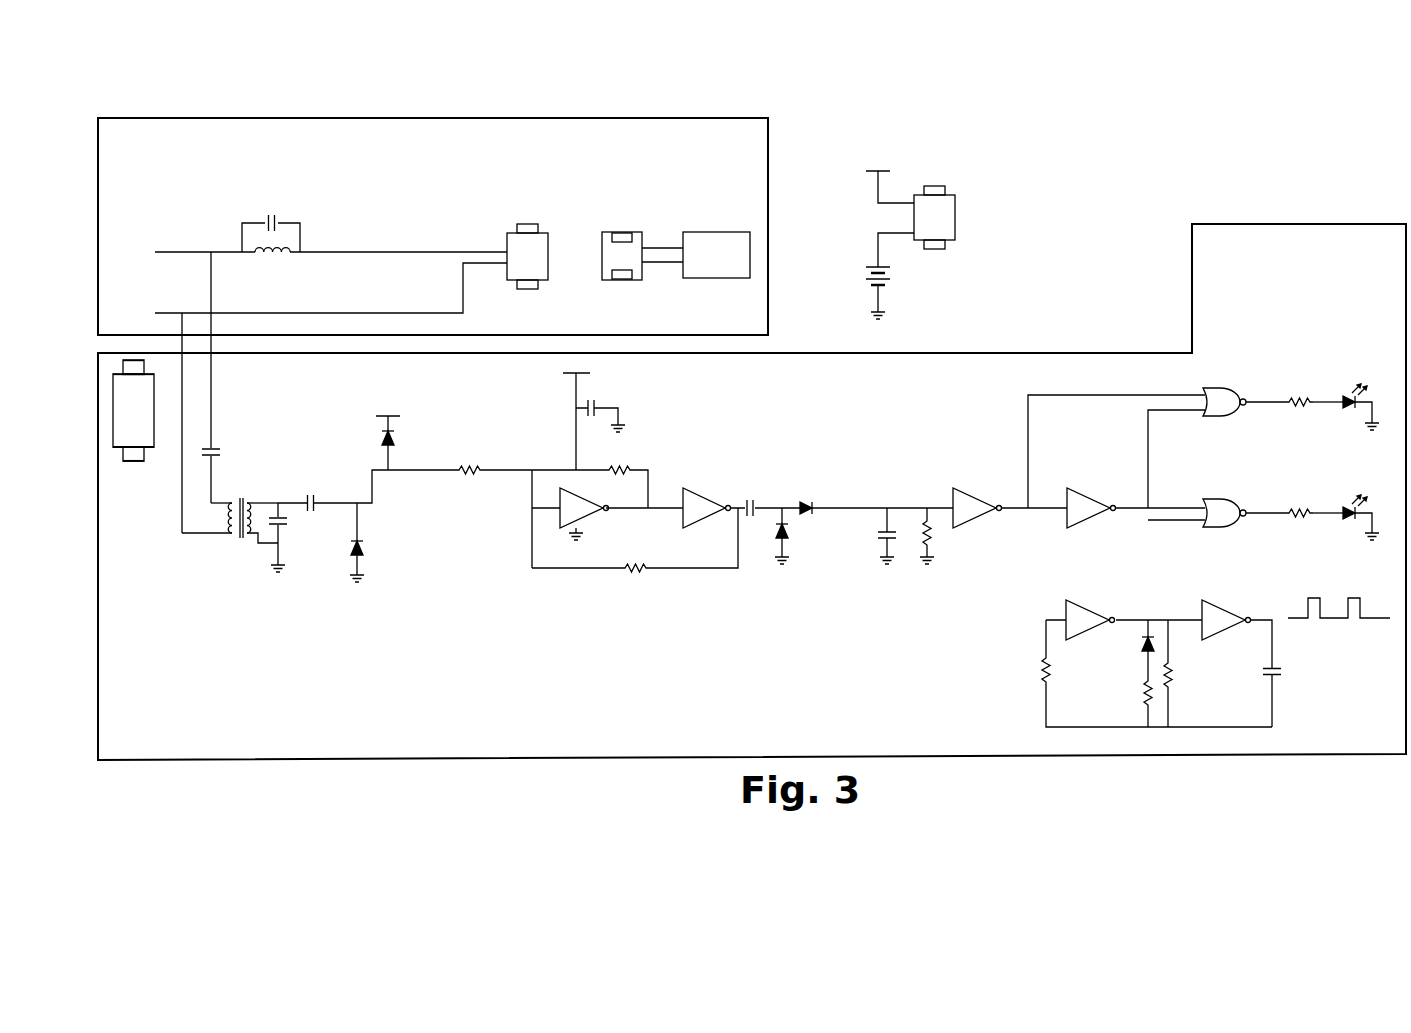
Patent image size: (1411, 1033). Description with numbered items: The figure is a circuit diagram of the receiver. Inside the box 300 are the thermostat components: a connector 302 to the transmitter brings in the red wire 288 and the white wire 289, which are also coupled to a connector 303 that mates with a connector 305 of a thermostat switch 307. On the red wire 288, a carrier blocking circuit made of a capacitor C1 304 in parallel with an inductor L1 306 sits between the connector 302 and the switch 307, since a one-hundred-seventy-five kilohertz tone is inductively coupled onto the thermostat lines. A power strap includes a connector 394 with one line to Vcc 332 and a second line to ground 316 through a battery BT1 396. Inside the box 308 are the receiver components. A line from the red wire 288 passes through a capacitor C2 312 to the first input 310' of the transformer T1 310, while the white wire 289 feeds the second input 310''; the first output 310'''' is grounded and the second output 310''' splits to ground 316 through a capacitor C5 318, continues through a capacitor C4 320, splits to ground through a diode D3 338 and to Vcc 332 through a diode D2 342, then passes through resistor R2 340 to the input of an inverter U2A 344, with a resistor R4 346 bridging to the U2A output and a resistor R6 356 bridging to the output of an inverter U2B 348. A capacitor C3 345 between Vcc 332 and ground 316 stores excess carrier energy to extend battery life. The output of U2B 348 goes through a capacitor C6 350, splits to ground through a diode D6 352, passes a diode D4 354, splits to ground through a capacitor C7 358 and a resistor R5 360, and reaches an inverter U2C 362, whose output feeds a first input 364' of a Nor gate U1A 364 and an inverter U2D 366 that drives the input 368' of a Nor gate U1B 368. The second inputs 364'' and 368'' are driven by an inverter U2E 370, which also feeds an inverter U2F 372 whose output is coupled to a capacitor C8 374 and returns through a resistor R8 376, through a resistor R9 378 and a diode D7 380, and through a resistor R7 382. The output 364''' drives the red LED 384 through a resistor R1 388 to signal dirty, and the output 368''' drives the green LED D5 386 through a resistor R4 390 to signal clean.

The box 300 is at (477, 107).
The connector 302 is at (115, 273).
The red wire 288 is at (165, 251).
The white wire 289 is at (168, 310).
The capacitor C1 304 is at (270, 215).
The inductor L1 306 is at (267, 256).
The connector 303 is at (541, 227).
The connector 305 is at (625, 229).
The thermostat switch 307 is at (715, 229).
The Vcc 332 is at (852, 154).
The connector 394 is at (951, 186).
The battery BT1 396 is at (893, 281).
The ground 316 is at (886, 317).
The box 308 is at (1355, 224).
The capacitor C2 312 is at (212, 448).
The transformer T1 310 is at (203, 548).
The first input 310' is at (228, 489).
The second input 310'' is at (207, 541).
The second output 310''' is at (269, 489).
The first output 310'''' is at (262, 546).
The capacitor C5 318 is at (284, 528).
The capacitor C4 320 is at (318, 503).
The diode D3 338 is at (348, 539).
The diode D2 342 is at (398, 450).
The resistor R2 340 is at (482, 465).
The capacitor C3 345 is at (597, 399).
The resistor R4 346 is at (618, 470).
The inverter U2A 344 is at (586, 521).
The resistor R6 356 is at (635, 546).
The inverter U2B 348 is at (712, 521).
The capacitor C6 350 is at (769, 495).
The diode D4 354 is at (801, 506).
The diode D6 352 is at (800, 532).
The capacitor C7 358 is at (876, 536).
The resistor R5 360 is at (931, 545).
The inverter U2C 362 is at (970, 493).
The inverter U2D 366 is at (1080, 493).
The Nor gate U1A 364 is at (1245, 397).
The first input 364' is at (1116, 439).
The second input 364'' is at (1176, 459).
The output 364''' is at (1270, 415).
The resistor R1 388 is at (1315, 407).
The LED 384 is at (1346, 409).
The Nor gate U1B 368 is at (1245, 501).
The input 368' is at (1180, 494).
The second input 368'' is at (1176, 532).
The output 368''' is at (1269, 497).
The resistor R4 390 is at (1315, 517).
The LED D5 386 is at (1352, 506).
The inverter U2E 370 is at (1098, 628).
The inverter U2F 372 is at (1235, 628).
The diode D7 380 is at (1154, 644).
The resistor R7 382 is at (1043, 669).
The resistor R9 378 is at (1141, 698).
The resistor R8 376 is at (1172, 688).
The capacitor C8 374 is at (1275, 682).